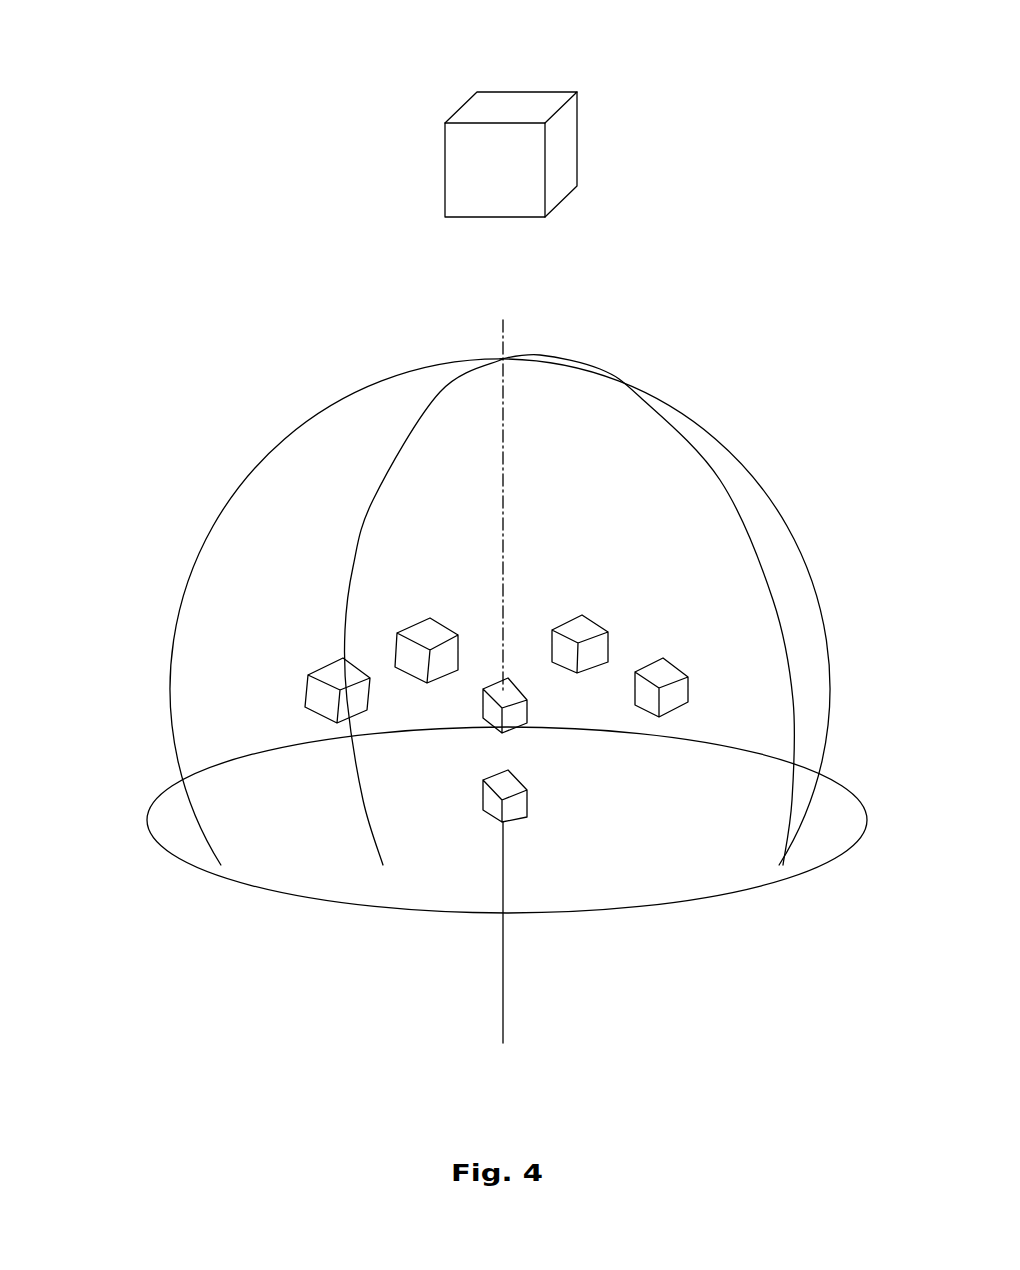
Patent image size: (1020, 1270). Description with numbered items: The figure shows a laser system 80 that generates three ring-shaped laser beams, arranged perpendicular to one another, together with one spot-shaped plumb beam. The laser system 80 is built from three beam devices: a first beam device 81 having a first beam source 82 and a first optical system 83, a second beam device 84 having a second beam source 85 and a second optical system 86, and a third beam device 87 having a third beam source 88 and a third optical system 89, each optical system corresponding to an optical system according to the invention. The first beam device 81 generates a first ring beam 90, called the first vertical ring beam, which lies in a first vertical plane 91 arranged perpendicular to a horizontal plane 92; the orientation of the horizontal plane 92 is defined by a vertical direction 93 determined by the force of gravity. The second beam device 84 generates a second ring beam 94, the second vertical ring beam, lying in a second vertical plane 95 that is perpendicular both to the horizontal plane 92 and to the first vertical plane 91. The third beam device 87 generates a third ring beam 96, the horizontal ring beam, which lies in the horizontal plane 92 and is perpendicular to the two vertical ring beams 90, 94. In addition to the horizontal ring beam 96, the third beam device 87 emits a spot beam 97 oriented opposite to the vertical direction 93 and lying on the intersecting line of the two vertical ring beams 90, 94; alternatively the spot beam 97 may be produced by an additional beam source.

The laser system 80 is at (759, 328).
The first beam device 81 is at (345, 622).
The first beam source 82 is at (332, 673).
The first optical system 83 is at (428, 630).
The second beam device 84 is at (651, 628).
The second beam source 85 is at (667, 672).
The second optical system 86 is at (580, 628).
The third beam device 87 is at (573, 759).
The third beam source 88 is at (513, 715).
The third optical system 89 is at (513, 805).
The first ring beam 90 is at (227, 510).
The first vertical plane 91 is at (498, 199).
The horizontal plane 92 is at (512, 97).
The vertical direction 93 is at (505, 462).
The second ring beam 94 is at (773, 598).
The second vertical plane 95 is at (568, 147).
The third ring beam 96 is at (147, 818).
The spot beam 97 is at (503, 958).